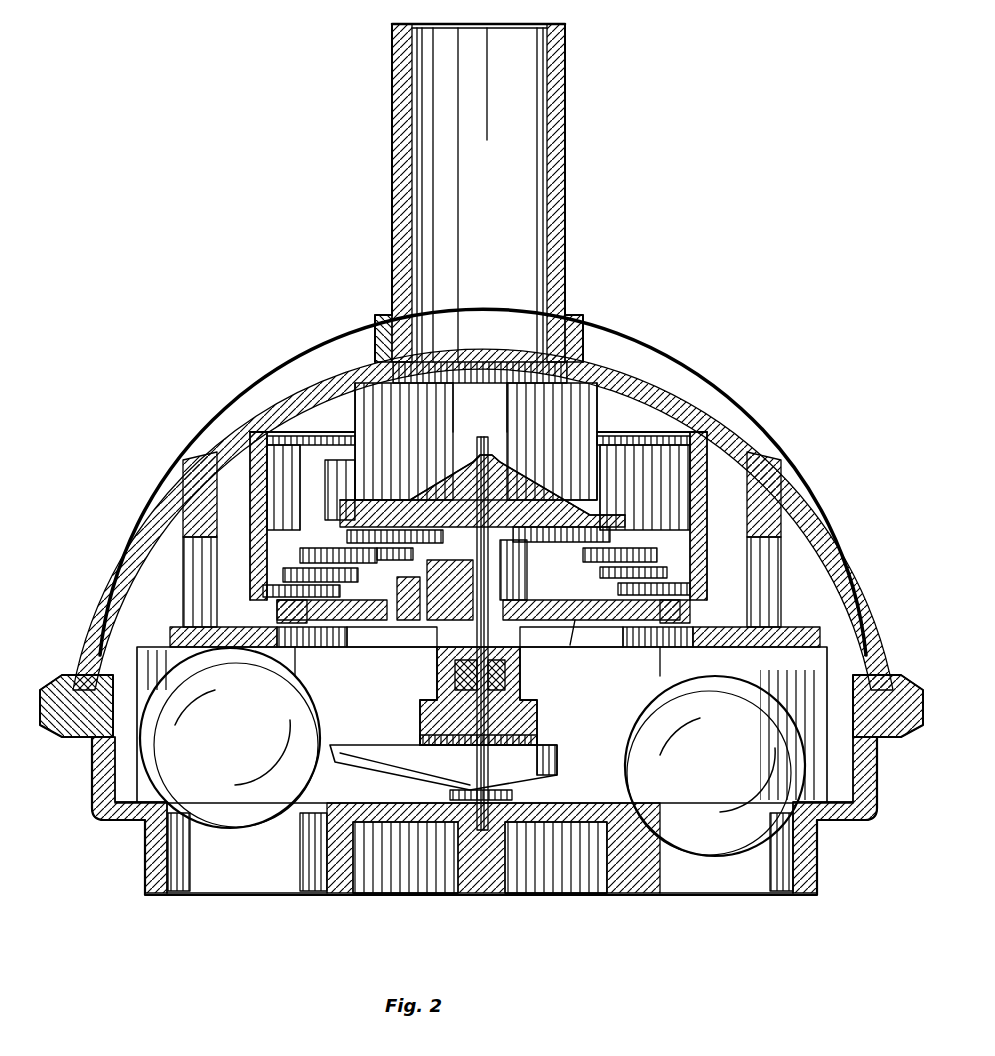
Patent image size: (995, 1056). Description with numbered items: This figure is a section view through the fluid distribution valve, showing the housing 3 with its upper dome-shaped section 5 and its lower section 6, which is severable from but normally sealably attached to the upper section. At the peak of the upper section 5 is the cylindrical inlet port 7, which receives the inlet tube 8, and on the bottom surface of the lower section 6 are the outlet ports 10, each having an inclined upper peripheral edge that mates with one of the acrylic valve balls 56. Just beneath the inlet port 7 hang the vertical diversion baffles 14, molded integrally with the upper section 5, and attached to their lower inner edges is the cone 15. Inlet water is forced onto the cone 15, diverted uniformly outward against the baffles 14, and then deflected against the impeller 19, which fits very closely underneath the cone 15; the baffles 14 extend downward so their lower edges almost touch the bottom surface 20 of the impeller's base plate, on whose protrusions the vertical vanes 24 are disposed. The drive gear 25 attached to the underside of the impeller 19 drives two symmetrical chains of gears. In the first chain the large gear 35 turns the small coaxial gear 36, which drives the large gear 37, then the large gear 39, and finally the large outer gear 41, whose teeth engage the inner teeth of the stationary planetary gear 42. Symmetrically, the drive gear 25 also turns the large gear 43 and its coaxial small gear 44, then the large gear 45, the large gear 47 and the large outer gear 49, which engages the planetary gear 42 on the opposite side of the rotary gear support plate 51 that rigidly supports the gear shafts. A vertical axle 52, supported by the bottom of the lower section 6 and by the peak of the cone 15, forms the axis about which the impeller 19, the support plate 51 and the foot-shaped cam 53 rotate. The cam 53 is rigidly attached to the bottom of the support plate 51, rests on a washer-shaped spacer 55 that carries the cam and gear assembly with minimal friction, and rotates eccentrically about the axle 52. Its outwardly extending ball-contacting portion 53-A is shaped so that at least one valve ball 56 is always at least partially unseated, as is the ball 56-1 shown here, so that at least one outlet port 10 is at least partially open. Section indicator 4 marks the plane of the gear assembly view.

The lower housing section 6 is at (100, 800).
The inlet tube 8 is at (567, 160).
The inlet port 7 is at (585, 330).
The outlet ports 10 is at (312, 898).
The diversion baffles 14 is at (362, 400).
The cone 15 is at (489, 470).
The impeller 19 is at (547, 560).
The bottom surface of base plate 20 is at (478, 515).
The vertical vanes 24 is at (290, 470).
The drive gear 25 is at (470, 515).
The first large gear 35 is at (605, 542).
The small coaxial gear 36 is at (555, 600).
The large gear 37 is at (660, 560).
The large gear 39 is at (667, 573).
The large outer gear 41 is at (690, 590).
The stationary planetary gear 42 is at (270, 600).
The large gear 43 is at (413, 552).
The small coaxial gear 44 is at (425, 580).
The large gear 45 is at (345, 537).
The large gear 47 is at (300, 555).
The large outer gear 49 is at (318, 600).
The rotary gear support plate 51 is at (583, 632).
The vertical axle 52 is at (478, 672).
The foot-shaped cam 53 is at (560, 760).
The ball-contacting portion of cam 53-A is at (360, 752).
The washer-shaped spacer 55 is at (515, 795).
The valve balls 56 is at (702, 845).
The unseated valve ball 56-1 is at (268, 826).
The housing 3 is at (60, 648).
The section line 4 is at (233, 560).
The upper dome-shaped housing section 5 is at (282, 445).